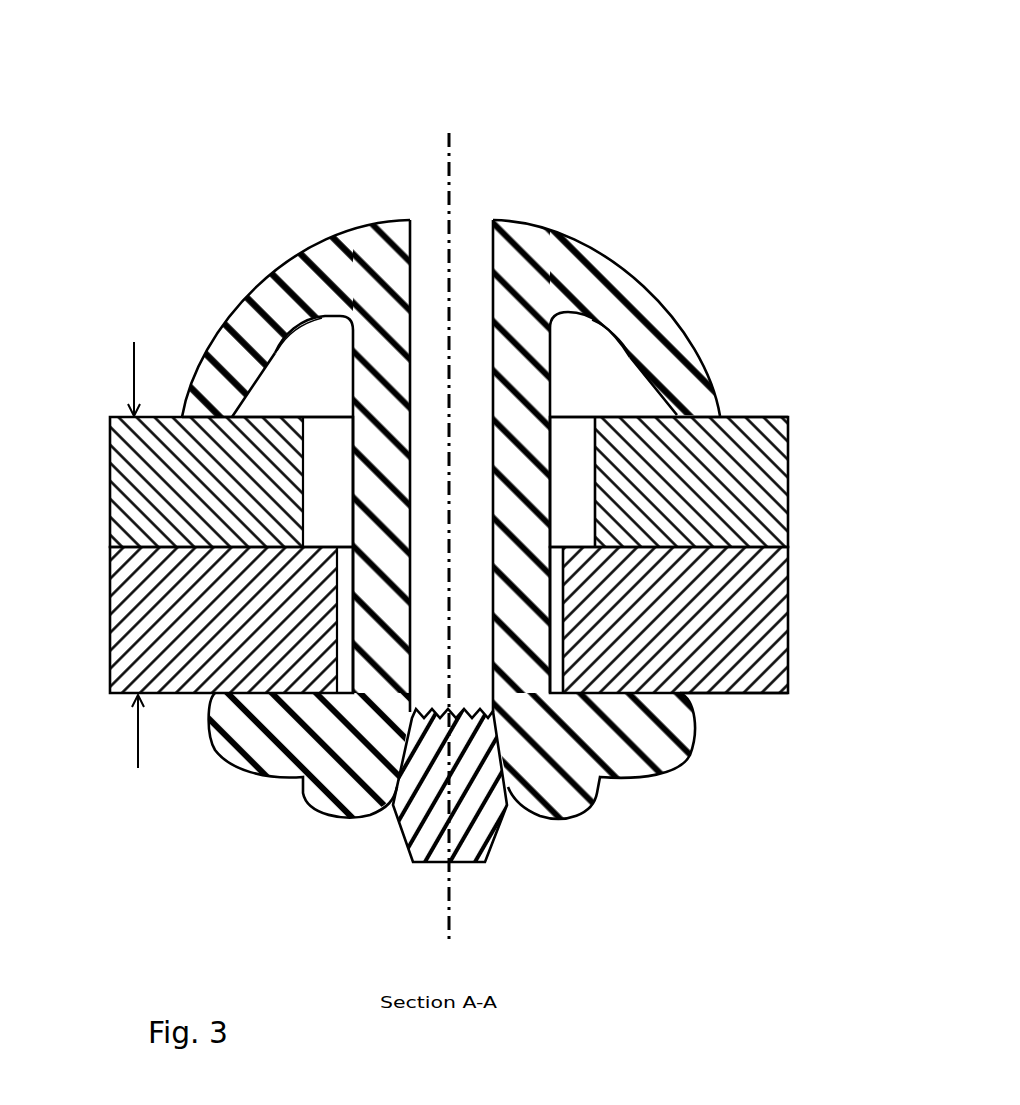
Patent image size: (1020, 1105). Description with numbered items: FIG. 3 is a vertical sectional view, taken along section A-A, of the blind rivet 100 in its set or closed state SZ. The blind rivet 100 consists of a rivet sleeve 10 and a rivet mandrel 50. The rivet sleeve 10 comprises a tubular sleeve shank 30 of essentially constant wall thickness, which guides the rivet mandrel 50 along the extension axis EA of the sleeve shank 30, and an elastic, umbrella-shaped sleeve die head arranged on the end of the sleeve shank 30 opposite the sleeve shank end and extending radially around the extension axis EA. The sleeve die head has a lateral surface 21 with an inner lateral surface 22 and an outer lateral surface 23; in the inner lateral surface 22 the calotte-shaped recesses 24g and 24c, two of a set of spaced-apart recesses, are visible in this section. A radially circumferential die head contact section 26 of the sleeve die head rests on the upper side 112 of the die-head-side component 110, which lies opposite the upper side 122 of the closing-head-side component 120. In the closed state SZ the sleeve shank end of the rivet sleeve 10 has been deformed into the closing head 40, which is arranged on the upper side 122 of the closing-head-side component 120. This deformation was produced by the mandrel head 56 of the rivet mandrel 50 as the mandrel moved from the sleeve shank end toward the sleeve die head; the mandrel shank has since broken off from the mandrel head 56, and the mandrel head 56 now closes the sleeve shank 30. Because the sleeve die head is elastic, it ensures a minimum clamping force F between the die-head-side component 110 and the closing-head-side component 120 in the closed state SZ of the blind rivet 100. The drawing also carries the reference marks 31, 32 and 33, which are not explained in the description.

The blind rivet 100 is at (269, 69).
The rivet sleeve 10 is at (585, 198).
The lateral surface 21 is at (484, 448).
The inner lateral surface 22 is at (251, 399).
The outer lateral surface 23 is at (218, 333).
The recess 24g is at (302, 333).
The recess 24c is at (610, 333).
The die head contact section 26 is at (210, 424).
The rivet shank 31 is at (493, 264).
The shank wall 32 is at (451, 448).
The recess 33 is at (352, 444).
The sleeve shank 30 is at (206, 900).
The closing head 40 is at (491, 760).
The closed state SZ is at (664, 757).
The rivet mandrel 50 is at (511, 805).
The mandrel head 56 is at (490, 853).
The die-head-side component 110 is at (476, 443).
The upper side 112 is at (772, 414).
The closing-head-side component 120 is at (469, 663).
The upper side 122 is at (750, 707).
The extension axis EA is at (452, 534).
The minimum clamping force F is at (129, 555).